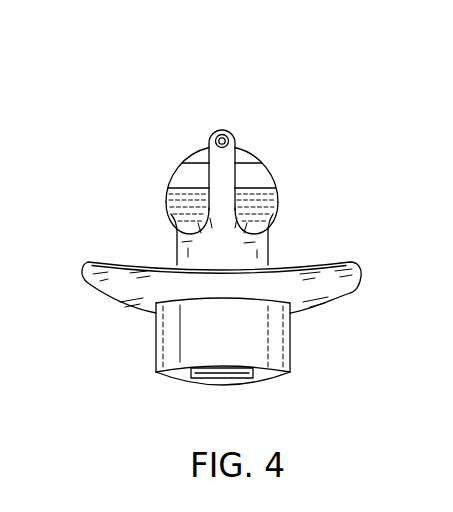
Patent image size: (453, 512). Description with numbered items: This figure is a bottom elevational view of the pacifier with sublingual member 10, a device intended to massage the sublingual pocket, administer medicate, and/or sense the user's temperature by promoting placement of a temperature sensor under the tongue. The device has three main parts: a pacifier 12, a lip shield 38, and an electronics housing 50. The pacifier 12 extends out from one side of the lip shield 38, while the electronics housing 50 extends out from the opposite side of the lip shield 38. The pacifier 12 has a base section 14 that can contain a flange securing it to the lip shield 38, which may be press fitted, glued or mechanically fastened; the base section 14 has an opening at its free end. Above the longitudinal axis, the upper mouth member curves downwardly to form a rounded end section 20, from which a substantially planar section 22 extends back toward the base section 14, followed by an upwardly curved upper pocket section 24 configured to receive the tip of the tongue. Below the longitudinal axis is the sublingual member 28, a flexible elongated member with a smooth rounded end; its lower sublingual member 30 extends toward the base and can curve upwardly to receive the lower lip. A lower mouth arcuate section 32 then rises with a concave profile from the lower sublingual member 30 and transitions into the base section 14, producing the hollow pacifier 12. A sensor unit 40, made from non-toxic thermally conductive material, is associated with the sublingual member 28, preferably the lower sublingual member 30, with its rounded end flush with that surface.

The pacifier with sublingual member 10 is at (185, 81).
The pacifier 12 is at (154, 177).
The base section 14 is at (176, 247).
The end section 20 is at (256, 146).
The planar section 22 is at (266, 172).
The upper pocket section 24 is at (263, 203).
The sublingual member 28 is at (220, 163).
The lower sublingual member 30 is at (200, 142).
The lower mouth arcuate section 32 is at (220, 254).
The lip shield 38 is at (130, 312).
The sensor unit 40 is at (222, 134).
The electronics housing 50 is at (290, 357).